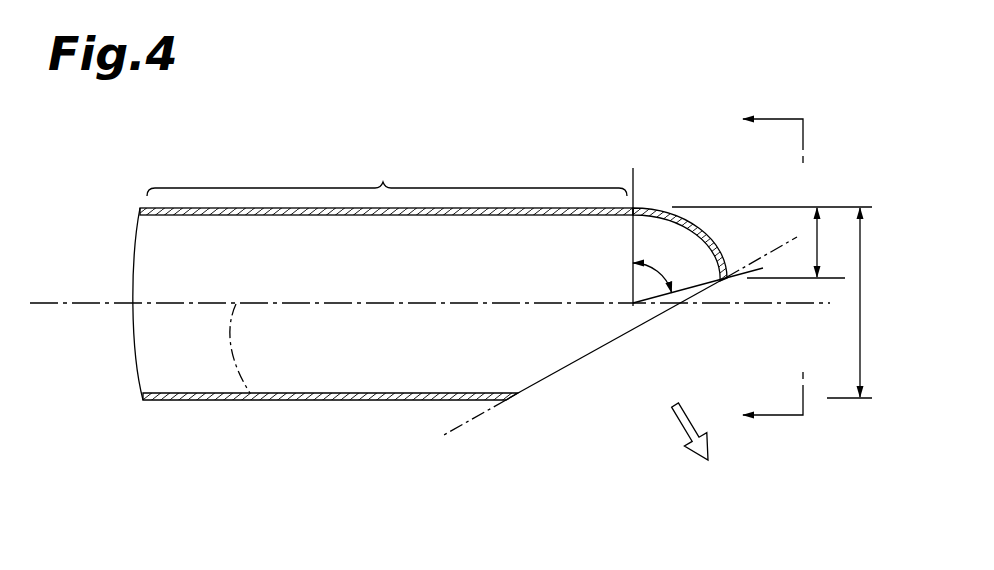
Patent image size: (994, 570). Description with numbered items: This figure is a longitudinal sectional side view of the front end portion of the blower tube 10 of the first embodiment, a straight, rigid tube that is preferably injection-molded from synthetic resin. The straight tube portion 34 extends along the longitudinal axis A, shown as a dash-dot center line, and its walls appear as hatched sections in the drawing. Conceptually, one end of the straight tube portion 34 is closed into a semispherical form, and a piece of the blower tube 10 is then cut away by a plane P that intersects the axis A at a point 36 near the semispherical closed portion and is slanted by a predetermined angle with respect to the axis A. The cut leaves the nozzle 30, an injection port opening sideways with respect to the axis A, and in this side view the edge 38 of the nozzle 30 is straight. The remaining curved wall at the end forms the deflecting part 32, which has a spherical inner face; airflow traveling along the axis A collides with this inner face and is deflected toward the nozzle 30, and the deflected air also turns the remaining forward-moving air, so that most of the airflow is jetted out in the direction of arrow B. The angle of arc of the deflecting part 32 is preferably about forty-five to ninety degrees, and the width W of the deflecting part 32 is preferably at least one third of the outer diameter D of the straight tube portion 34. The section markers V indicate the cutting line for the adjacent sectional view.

The blower tube 10 is at (528, 160).
The nozzle 30 is at (567, 366).
The deflecting part 32 is at (660, 207).
The straight tube portion 34 is at (387, 173).
The point 36 is at (682, 303).
The edge 38 is at (521, 398).
The longitudinal axis A is at (250, 400).
The arrow B is at (683, 428).
The plane P is at (458, 428).
The width W is at (832, 242).
The outer diameter D is at (876, 302).
The section V- V is at (772, 269).